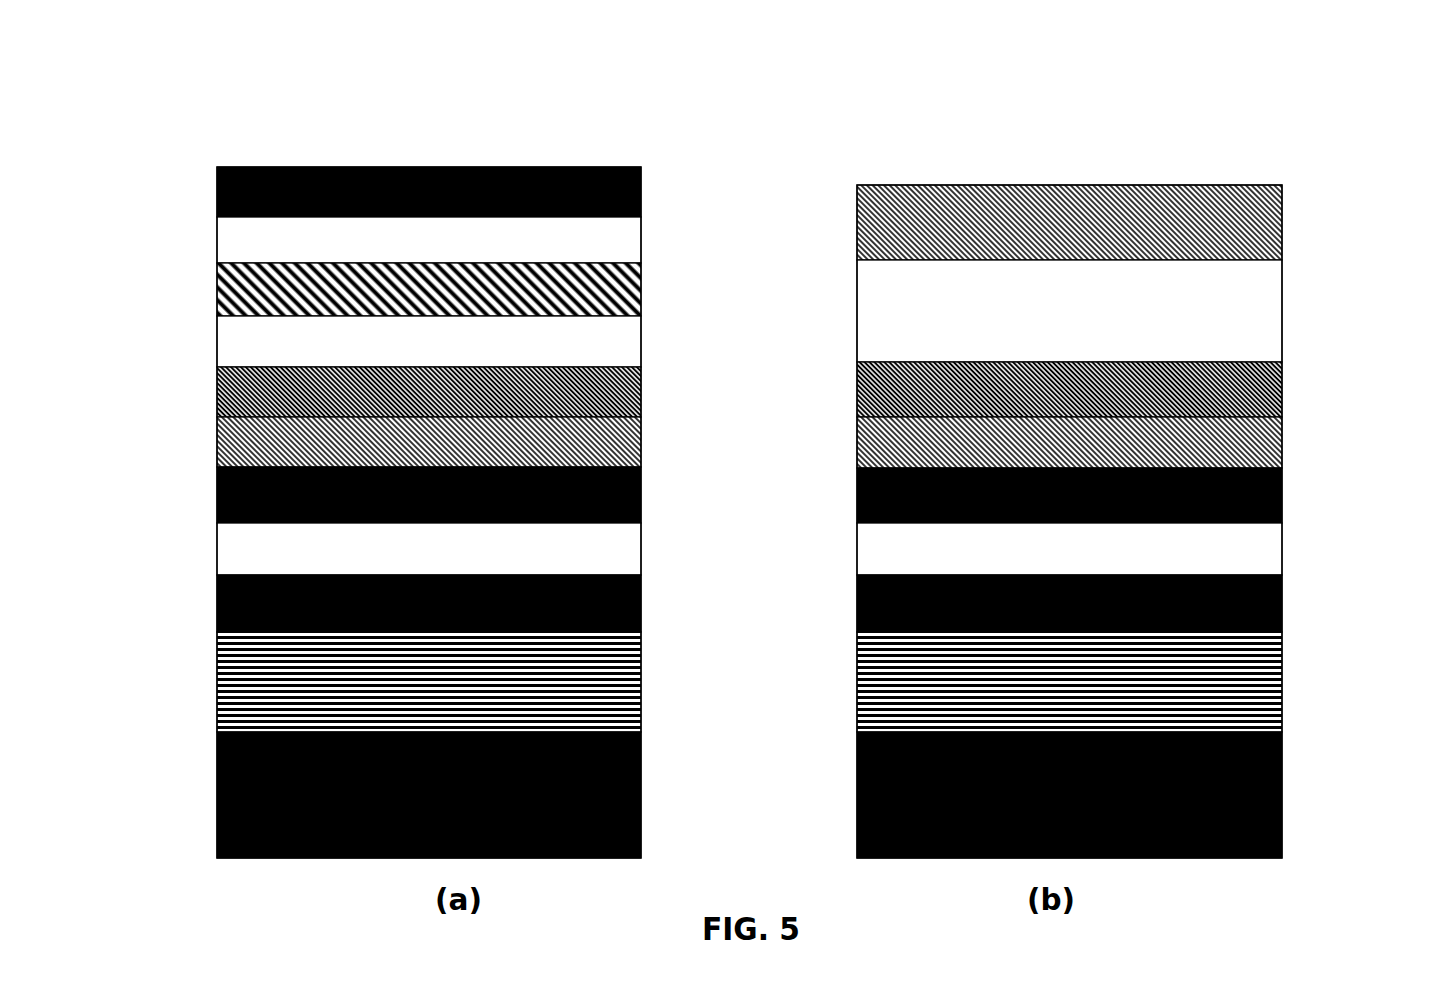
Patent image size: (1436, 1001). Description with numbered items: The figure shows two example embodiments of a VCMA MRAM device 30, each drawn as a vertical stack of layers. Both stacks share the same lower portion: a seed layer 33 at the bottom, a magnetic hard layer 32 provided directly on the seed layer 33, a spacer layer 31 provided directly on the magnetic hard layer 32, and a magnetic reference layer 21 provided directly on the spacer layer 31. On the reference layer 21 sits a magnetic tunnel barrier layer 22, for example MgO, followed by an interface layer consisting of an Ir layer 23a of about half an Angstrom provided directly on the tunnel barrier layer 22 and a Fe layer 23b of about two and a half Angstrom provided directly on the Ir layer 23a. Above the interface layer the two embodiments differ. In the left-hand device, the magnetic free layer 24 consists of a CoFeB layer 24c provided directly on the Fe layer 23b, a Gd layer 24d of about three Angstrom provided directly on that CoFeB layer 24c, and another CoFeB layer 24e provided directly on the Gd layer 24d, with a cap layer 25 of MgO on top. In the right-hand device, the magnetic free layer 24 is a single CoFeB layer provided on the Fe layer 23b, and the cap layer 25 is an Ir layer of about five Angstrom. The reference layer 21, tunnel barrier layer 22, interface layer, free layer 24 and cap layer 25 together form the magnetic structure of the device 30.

The VCMA MRAM device 30 is at (810, 80).
The cap layer 25 is at (217, 212).
The magnetic free layer 24 is at (1282, 288).
The CoFeB layer 24e is at (641, 237).
The Gd layer 24d is at (641, 288).
The CoFeB layer 24c is at (641, 335).
The Fe layer 23b is at (217, 393).
The Ir layer 23a is at (217, 460).
The magnetic tunnel barrier layer 22 is at (857, 495).
The magnetic reference layer 21 is at (857, 543).
The spacer layer 31 is at (857, 615).
The magnetic hard layer 32 is at (857, 660).
The seed layer 33 is at (857, 775).